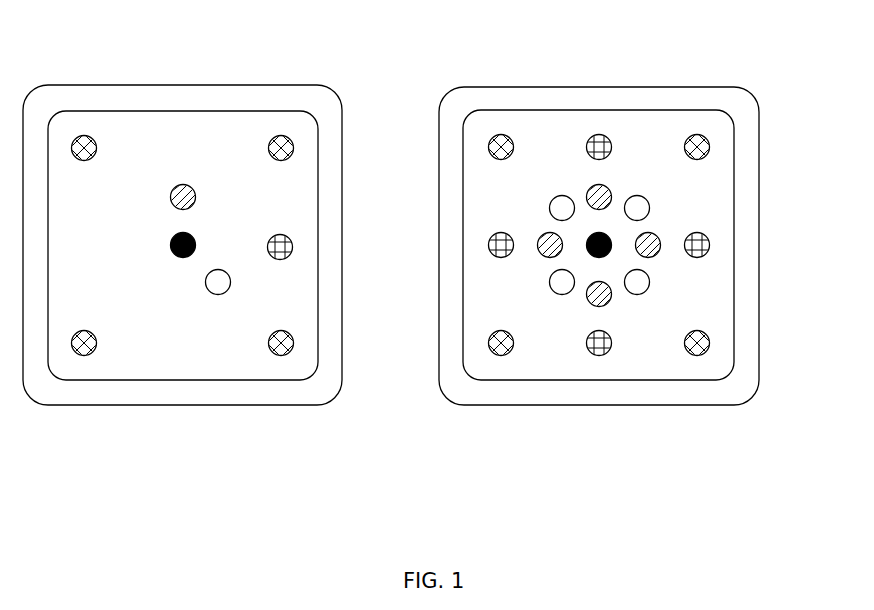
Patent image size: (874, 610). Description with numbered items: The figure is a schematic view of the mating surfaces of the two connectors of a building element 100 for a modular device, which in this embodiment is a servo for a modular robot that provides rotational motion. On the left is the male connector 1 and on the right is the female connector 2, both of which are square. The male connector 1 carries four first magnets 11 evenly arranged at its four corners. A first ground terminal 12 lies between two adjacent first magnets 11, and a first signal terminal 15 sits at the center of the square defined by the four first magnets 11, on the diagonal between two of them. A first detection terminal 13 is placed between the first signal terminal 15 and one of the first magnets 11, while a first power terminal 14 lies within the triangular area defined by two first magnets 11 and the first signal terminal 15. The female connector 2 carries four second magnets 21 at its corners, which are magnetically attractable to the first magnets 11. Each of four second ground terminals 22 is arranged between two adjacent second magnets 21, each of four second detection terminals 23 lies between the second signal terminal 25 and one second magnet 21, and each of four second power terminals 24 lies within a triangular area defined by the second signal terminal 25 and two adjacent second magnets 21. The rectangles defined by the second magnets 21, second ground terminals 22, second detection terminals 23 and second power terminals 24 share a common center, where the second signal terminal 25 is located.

The building element 100 is at (438, 28).
The male connector 1 is at (180, 87).
The first magnets 11 is at (292, 143).
The first ground terminal 12 is at (292, 243).
The first detection terminal 13 is at (229, 279).
The first power terminal 14 is at (196, 192).
The first signal terminal 15 is at (195, 238).
The female connector 2 is at (600, 87).
The second magnets 21 is at (708, 142).
The second ground terminals 22 is at (708, 242).
The second detection terminals 23 is at (648, 279).
The second power terminals 24 is at (611, 193).
The second signal terminal 25 is at (610, 238).